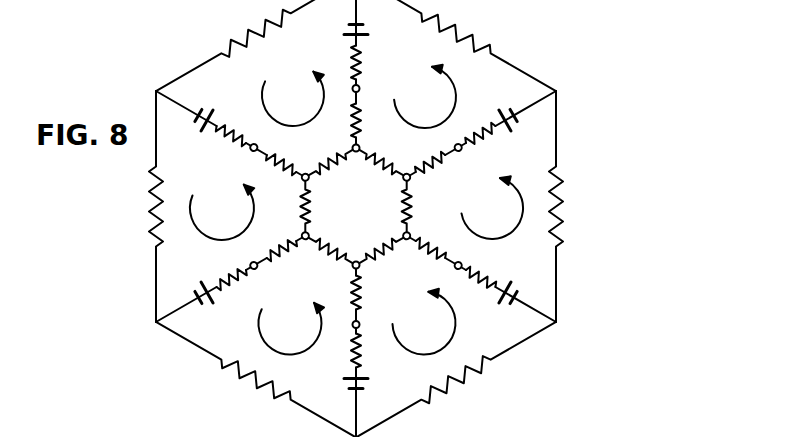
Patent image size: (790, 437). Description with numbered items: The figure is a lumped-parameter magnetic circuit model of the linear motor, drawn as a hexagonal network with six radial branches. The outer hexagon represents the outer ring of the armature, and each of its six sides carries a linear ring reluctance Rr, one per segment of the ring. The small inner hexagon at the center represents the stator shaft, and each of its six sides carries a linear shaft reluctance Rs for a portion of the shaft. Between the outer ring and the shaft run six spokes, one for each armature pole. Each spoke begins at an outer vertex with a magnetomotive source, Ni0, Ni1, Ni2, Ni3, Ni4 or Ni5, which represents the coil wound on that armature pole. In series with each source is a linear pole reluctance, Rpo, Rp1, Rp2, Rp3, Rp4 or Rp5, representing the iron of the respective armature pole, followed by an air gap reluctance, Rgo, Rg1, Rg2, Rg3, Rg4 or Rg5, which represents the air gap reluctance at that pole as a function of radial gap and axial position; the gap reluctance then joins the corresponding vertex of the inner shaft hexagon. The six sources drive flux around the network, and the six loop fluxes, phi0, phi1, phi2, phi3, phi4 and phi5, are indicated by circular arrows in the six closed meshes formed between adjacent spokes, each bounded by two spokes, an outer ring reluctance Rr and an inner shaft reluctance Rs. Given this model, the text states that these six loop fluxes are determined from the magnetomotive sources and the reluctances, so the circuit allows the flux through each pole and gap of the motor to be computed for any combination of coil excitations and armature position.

The outer ring segment reluctance Rr is at (355, 218).
The stator shaft portion reluctance Rs is at (355, 207).
The magnetomotive source Ni0 is at (375, 36).
The armature pole reluctance Rpo is at (374, 64).
The air gap reluctance Rgo is at (373, 123).
The magnetomotive source Ni1 is at (504, 104).
The armature pole reluctance Rp1 is at (488, 146).
The air gap reluctance Rg1 is at (437, 175).
The magnetomotive source Ni2 is at (525, 292).
The armature pole reluctance Rp2 is at (489, 269).
The air gap reluctance Rg2 is at (438, 241).
The magnetomotive source Ni3 is at (341, 380).
The armature pole reluctance Rp3 is at (376, 353).
The air gap reluctance Rg3 is at (375, 293).
The magnetomotive source Ni4 is at (191, 285).
The armature pole reluctance Rp4 is at (228, 270).
The air gap reluctance Rg4 is at (279, 241).
The magnetomotive source Ni5 is at (209, 107).
The armature pole reluctance Rp5 is at (241, 131).
The air gap reluctance Rg5 is at (287, 152).
The loop flux phi0 is at (425, 96).
The loop flux phi1 is at (493, 207).
The loop flux phi2 is at (424, 322).
The loop flux phi3 is at (291, 329).
The loop flux phi4 is at (222, 212).
The loop flux phi5 is at (293, 99).